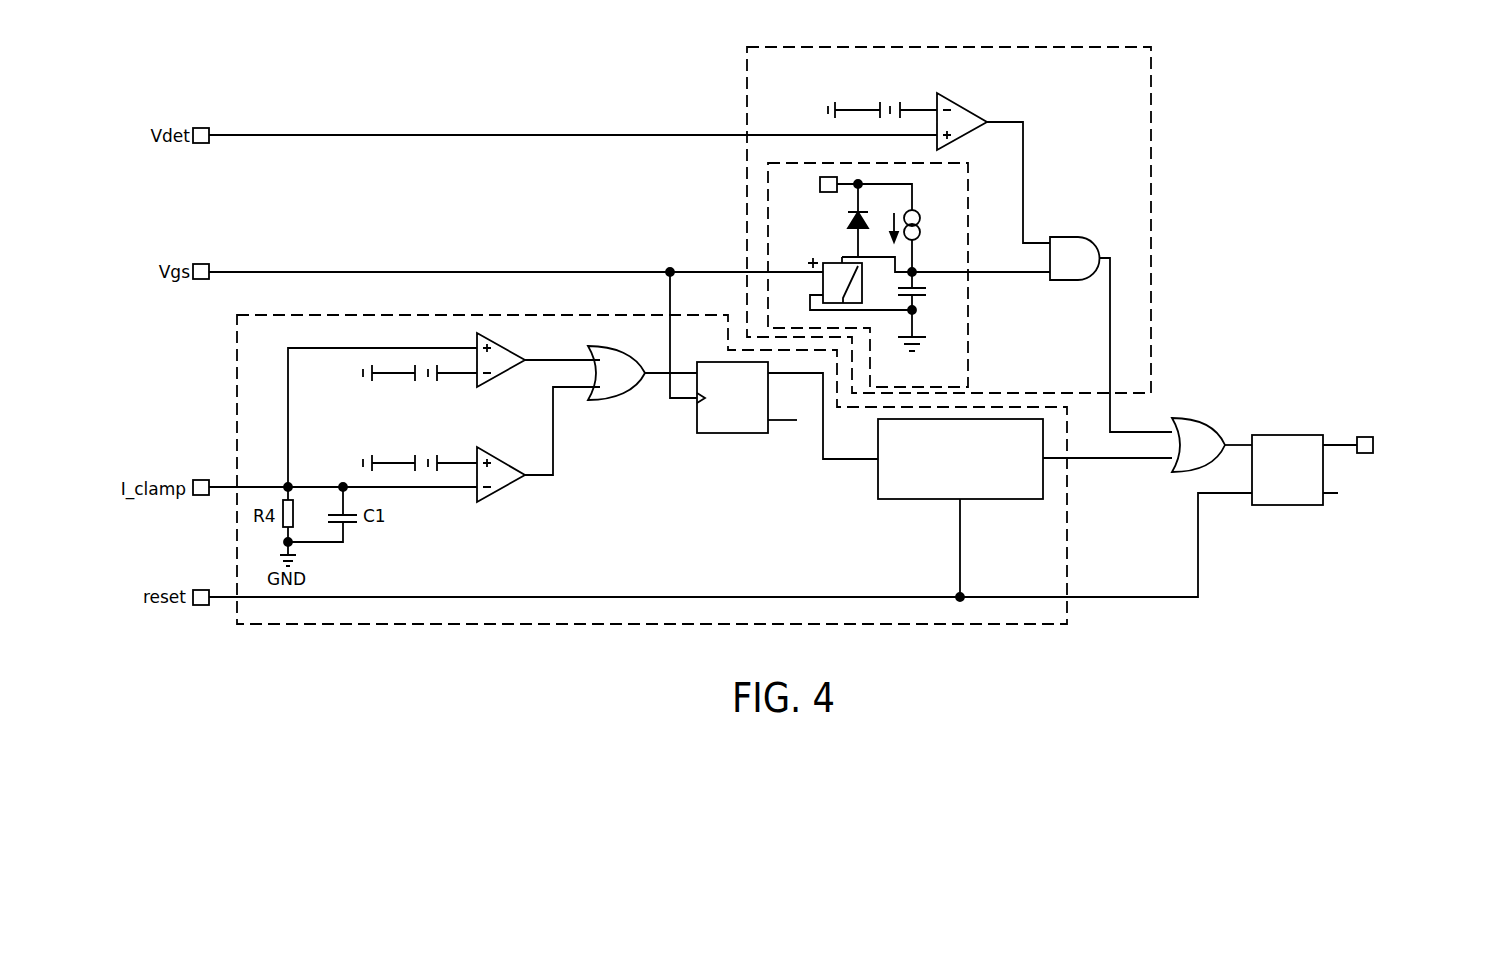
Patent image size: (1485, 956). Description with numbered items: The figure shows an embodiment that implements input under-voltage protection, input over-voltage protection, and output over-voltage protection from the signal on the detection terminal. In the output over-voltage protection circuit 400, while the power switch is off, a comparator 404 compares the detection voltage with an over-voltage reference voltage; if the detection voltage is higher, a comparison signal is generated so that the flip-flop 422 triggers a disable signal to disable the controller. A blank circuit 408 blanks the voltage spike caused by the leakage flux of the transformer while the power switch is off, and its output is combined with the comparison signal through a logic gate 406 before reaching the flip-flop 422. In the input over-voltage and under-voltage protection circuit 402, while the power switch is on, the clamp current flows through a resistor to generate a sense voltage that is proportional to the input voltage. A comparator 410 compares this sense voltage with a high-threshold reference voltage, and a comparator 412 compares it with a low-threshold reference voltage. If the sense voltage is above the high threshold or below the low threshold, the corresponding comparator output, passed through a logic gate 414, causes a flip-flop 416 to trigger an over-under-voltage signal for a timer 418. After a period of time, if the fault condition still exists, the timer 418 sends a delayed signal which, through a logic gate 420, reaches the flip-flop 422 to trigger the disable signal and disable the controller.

The output over-voltage protection circuit 400 is at (1151, 107).
The input over-voltage and under-voltage protection circuit 402 is at (237, 367).
The comparator 404 is at (962, 105).
The AND gate 406 is at (1072, 237).
The blank circuit 408 is at (968, 203).
The comparator 410 is at (500, 380).
The comparator 412 is at (500, 490).
The OR gate 414 is at (620, 395).
The flip-flop 416 is at (728, 435).
The timer 418 is at (910, 500).
The OR gate 420 is at (1197, 418).
The flip-flop 422 is at (1287, 435).